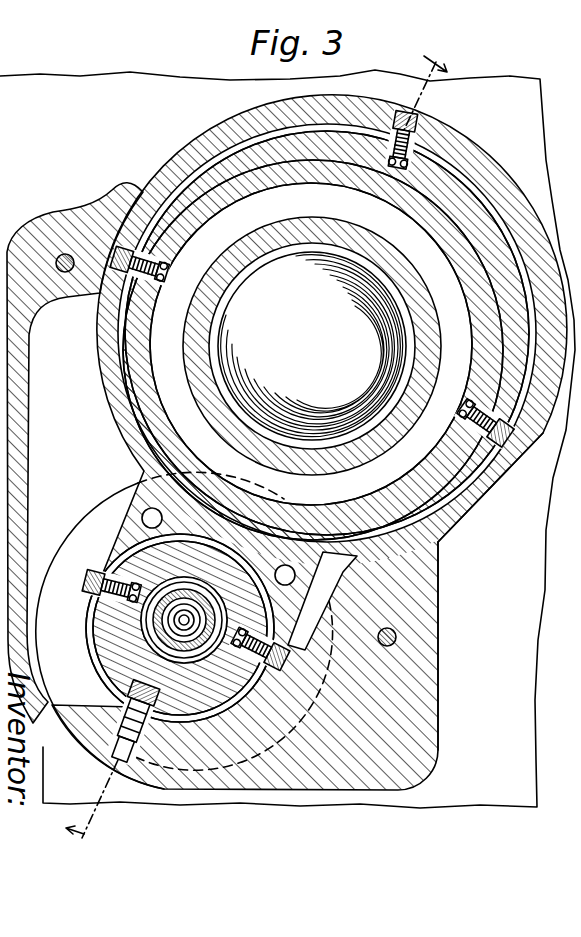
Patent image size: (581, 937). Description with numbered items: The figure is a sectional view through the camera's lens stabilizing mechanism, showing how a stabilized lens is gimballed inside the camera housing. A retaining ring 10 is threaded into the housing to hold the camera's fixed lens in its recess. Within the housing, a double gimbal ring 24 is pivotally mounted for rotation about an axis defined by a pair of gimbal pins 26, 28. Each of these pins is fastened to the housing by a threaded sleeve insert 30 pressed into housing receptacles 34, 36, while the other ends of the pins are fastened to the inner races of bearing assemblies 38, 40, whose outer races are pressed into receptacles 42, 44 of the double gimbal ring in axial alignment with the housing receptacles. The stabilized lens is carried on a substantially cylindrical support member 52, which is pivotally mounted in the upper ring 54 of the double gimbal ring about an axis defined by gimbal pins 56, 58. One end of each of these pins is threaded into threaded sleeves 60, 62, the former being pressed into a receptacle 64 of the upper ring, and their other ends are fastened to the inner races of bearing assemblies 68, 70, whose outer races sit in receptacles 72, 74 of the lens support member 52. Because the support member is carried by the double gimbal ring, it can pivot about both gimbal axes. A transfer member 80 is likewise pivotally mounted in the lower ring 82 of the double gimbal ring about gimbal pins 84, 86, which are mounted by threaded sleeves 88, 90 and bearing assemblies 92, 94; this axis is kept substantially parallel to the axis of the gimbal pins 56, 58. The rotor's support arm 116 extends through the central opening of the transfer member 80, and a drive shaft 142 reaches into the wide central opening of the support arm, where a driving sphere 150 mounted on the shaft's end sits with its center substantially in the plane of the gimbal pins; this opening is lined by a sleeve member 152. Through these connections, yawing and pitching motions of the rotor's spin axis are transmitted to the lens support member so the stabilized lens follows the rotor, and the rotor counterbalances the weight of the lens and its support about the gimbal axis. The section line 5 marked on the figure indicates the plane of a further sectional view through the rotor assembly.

The retaining ring 10 is at (290, 468).
The double gimbal ring 24 is at (445, 212).
The gimbal pin 26 is at (417, 128).
The gimbal pin 28 is at (112, 760).
The threaded sleeve insert 30 is at (398, 118).
The receptacle 34 is at (412, 172).
The receptacle 36 is at (118, 790).
The bearing assembly 38 is at (379, 143).
The bearing assembly 40 is at (176, 723).
The receptacle 42 is at (440, 190).
The receptacle 44 is at (130, 687).
The support member 52 is at (470, 220).
The upper ring 54 is at (132, 258).
The gimbal pin 56 is at (90, 207).
The gimbal pin 58 is at (505, 447).
The threaded sleeve 60 is at (118, 278).
The threaded sleeve 62 is at (498, 463).
The receptacle 64 is at (112, 243).
The bearing assembly 68 is at (146, 240).
The bearing assembly 70 is at (478, 402).
The receptacle 72 is at (165, 272).
The receptacle 74 is at (462, 418).
The transfer member 80 is at (135, 473).
The lower ring 82 is at (95, 608).
The gimbal pin 84 is at (91, 581).
The gimbal pin 86 is at (283, 668).
The threaded sleeve 88 is at (96, 553).
The threaded sleeve 90 is at (263, 670).
The bearing assembly 92 is at (108, 553).
The bearing assembly 94 is at (228, 632).
The support arm 116 is at (132, 661).
The drive shaft 142 is at (140, 644).
The driving sphere 150 is at (160, 620).
The sleeve member 152 is at (150, 628).
The section line 5- 5 is at (247, 439).